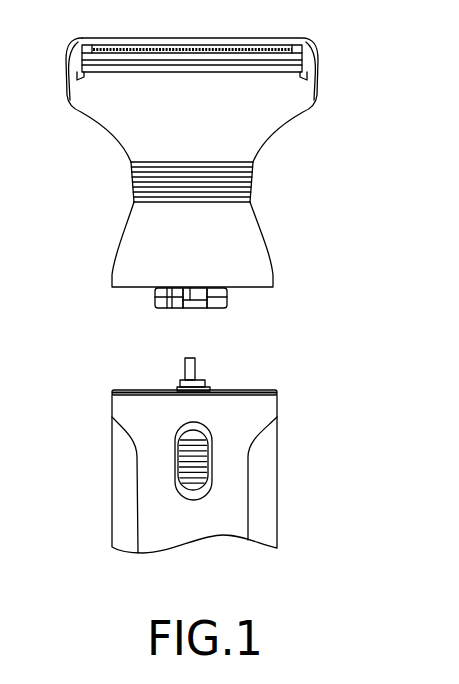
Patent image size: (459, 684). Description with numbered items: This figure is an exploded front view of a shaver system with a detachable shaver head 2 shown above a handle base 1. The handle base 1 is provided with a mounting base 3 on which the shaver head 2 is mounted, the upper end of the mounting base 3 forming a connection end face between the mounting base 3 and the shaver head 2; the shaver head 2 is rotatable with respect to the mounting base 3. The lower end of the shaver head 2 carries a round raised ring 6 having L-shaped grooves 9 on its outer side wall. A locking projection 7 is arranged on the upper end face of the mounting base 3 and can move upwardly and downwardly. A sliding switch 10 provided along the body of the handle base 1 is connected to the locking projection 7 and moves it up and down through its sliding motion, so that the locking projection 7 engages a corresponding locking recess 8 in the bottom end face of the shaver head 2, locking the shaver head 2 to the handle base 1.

The handle base 1 is at (122, 482).
The shaver head 2 is at (258, 257).
The mounting base 3 is at (265, 398).
The round raised ring 6 is at (225, 300).
The locking projection 7 is at (177, 388).
The locking recess 8 is at (196, 290).
The L-shaped grooves 9 is at (175, 297).
The sliding switch 10 is at (198, 463).